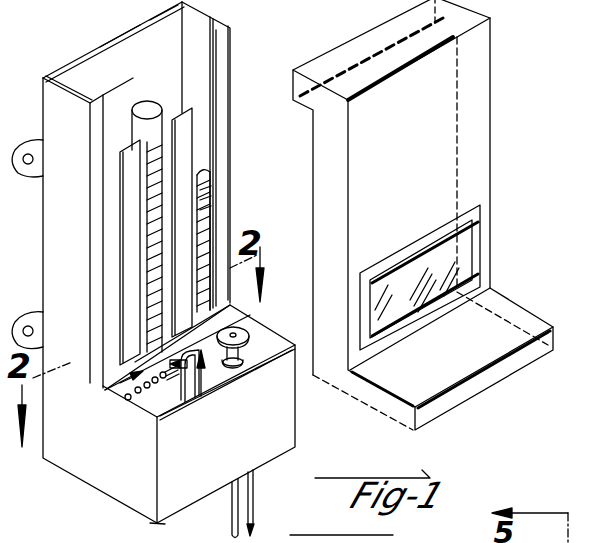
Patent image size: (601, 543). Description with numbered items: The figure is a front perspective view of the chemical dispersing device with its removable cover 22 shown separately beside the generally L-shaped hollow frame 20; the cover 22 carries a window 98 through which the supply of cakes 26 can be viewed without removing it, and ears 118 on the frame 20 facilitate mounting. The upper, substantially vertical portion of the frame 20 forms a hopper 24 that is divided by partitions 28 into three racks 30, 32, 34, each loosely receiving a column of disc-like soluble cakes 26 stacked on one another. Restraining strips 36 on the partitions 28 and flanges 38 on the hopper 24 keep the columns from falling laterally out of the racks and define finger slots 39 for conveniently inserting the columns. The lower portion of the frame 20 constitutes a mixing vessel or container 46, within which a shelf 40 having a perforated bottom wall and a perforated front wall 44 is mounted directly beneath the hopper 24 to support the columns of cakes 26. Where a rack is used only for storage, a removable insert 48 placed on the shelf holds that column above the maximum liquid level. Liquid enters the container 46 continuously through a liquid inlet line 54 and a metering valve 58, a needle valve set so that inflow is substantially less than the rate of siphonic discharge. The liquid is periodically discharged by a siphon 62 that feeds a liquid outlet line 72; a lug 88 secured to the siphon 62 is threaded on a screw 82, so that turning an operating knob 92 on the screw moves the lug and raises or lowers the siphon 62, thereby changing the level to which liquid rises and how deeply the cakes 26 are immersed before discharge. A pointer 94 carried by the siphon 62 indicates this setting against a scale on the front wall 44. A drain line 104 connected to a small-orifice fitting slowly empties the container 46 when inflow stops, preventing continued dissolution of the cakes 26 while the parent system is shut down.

The hollow frame 20 is at (242, 70).
The removable cover 22 is at (505, 98).
The hopper 24 is at (56, 217).
The cakes 26 is at (208, 212).
The partitions 28 is at (146, 60).
The rack 30 is at (68, 72).
The rack 32 is at (118, 42).
The rack 34 is at (166, 20).
The restraining strips 36 is at (120, 174).
The flanges 38 is at (97, 264).
The finger slots 39 is at (151, 258).
The shelf 40 is at (115, 398).
The perforated front wall 44 is at (124, 398).
The mixing vessel or container 46 is at (266, 341).
The removable insert 48 is at (591, 438).
The liquid inlet line 54 is at (158, 522).
The metering valve 58 is at (150, 418).
The siphon 62 is at (203, 398).
The liquid outlet line 72 is at (231, 507).
The screw 82 is at (240, 358).
The lug 88 is at (236, 375).
The operating knob 92 is at (237, 327).
The pointer 94 is at (178, 405).
The window 98 is at (433, 252).
The drain line 104 is at (253, 473).
The ears 118 is at (42, 176).